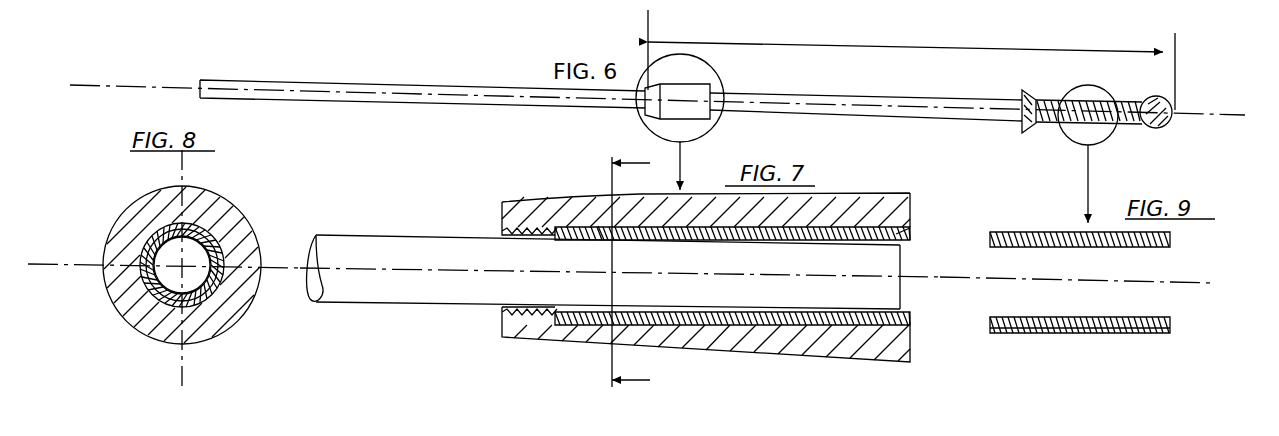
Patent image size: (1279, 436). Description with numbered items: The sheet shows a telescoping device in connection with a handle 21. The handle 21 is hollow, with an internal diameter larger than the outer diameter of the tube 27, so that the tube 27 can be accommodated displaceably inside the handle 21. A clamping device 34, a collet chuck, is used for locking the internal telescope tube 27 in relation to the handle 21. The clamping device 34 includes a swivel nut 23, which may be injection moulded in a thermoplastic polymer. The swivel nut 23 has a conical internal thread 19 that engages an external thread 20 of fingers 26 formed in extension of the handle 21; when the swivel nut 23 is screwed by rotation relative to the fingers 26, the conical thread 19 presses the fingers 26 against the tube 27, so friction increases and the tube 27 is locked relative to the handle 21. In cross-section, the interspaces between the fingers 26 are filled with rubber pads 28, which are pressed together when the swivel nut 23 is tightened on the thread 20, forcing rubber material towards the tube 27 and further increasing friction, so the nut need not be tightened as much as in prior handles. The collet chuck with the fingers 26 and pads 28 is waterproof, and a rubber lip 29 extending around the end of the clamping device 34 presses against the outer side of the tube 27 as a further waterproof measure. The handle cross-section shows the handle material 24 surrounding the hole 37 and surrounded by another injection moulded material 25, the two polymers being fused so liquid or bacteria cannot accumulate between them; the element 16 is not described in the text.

In FIG. 7, the elastomeric bearing layer 16 is at (623, 318).
In FIG. 7, the conical internal thread 19 is at (502, 206).
In FIG. 7, the external thread 20 is at (600, 233).
In FIG. 7, the handle 21 is at (896, 234).
In FIG. 8, the swivel nut 23 is at (203, 203).
In FIG. 7, the swivel nut 23 is at (867, 208).
In FIG. 9, the handle material 24 is at (1168, 323).
In FIG. 9, the injection moulded material 25 is at (1140, 332).
In FIG. 8, the fingers 26 is at (140, 250).
In FIG. 7, the fingers 26 is at (592, 231).
In FIG. 6, the tube 27 is at (331, 91).
In FIG. 8, the tube 27 is at (205, 300).
In FIG. 7, the tube 27 is at (348, 288).
In FIG. 6, the rubber pads 28 is at (911, 116).
In FIG. 8, the rubber pads 28 is at (152, 225).
In FIG. 7, the rubber lip 29 is at (531, 318).
In FIG. 6, the clamping device 34 is at (693, 105).
In FIG. 9, the hole 37 is at (1145, 268).